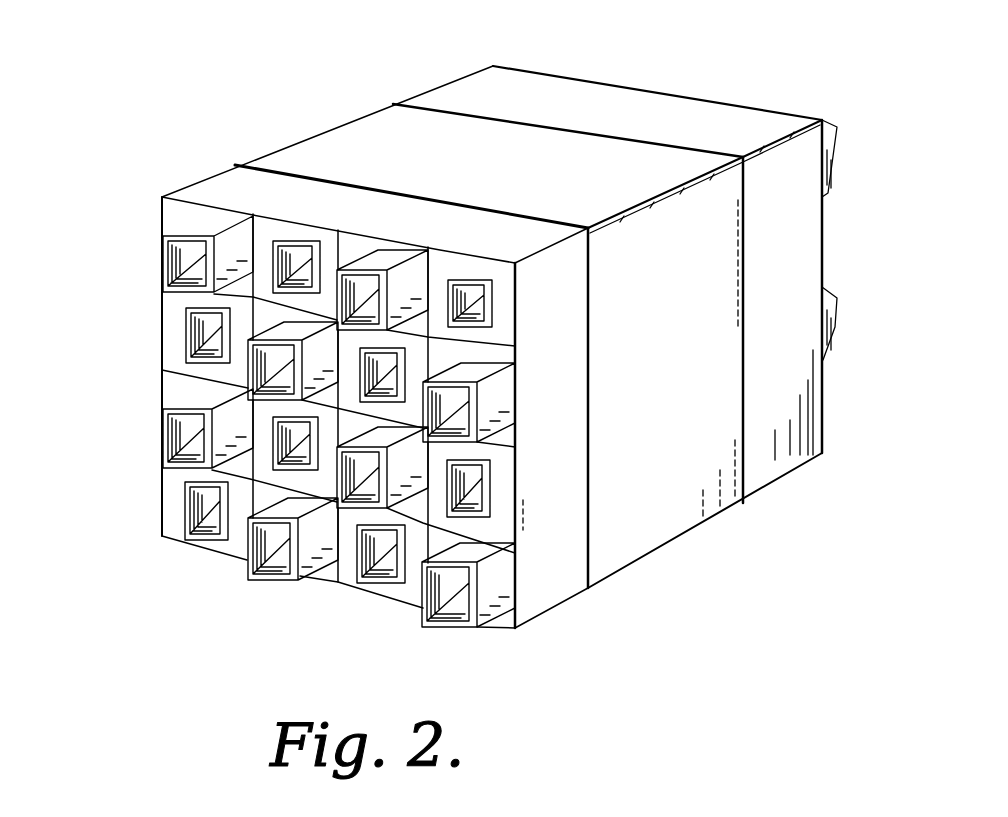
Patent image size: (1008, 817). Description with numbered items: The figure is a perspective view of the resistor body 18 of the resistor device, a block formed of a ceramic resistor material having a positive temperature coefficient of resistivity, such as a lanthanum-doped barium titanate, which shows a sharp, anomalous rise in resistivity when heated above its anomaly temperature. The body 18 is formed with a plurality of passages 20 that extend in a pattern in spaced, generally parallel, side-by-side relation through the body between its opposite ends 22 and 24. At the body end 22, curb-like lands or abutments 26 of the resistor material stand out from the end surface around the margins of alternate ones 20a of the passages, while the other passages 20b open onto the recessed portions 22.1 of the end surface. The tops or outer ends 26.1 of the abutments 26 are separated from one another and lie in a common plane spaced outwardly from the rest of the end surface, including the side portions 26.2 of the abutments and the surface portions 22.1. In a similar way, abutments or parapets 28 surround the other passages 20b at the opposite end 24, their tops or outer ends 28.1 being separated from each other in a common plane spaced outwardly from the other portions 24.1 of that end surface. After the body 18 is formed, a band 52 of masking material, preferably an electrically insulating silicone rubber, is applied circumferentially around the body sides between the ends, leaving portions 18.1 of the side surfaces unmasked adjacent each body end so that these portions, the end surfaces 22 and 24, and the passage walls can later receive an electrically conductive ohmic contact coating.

The body 18 is at (500, 76).
The portions of the body side surfaces 18.1 is at (440, 84).
The passages 20 is at (188, 258).
The alternate ones of the body passages 20a is at (165, 232).
The other passages 20b is at (288, 254).
The body end 22 is at (442, 270).
The portions of the body end surface 22.1 is at (268, 226).
The opposite end of the body 24 is at (664, 88).
The other portions of the opposite end surface 24.1 is at (823, 227).
The lands or abutments 26 is at (176, 216).
The tops or outer ends of the abutments 26.1 is at (168, 283).
The side portions of the abutments 26.2 is at (473, 360).
The abutments or parapets 28 is at (831, 132).
The tops or outer ends of the abutments 28.1 is at (836, 150).
The band of masking material 52 is at (588, 430).